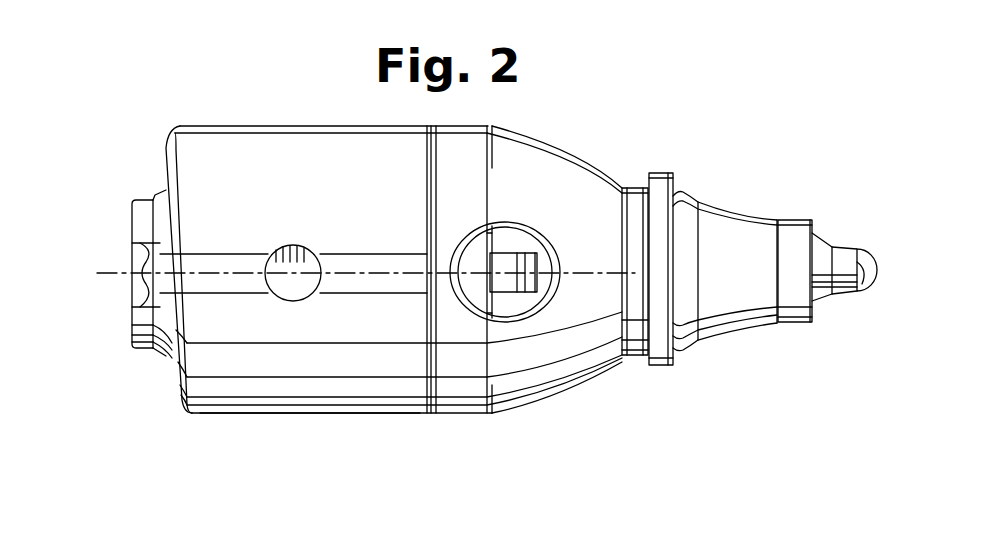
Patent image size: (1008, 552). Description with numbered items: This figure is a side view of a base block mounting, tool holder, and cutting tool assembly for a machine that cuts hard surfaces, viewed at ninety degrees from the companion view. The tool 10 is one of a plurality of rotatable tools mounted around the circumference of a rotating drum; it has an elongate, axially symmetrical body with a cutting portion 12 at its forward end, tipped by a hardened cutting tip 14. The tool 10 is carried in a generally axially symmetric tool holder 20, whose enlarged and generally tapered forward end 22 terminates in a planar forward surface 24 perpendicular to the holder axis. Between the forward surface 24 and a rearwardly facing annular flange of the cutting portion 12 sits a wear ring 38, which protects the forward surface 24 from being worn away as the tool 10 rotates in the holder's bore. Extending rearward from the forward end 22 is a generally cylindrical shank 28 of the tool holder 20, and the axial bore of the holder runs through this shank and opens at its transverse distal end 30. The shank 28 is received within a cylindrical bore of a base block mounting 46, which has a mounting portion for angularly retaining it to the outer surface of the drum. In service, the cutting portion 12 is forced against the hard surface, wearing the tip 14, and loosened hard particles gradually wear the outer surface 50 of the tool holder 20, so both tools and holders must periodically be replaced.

The tool 10 is at (762, 212).
The cutting portion 12 is at (793, 322).
The cutting tip 14 is at (871, 262).
The tool holder 20 is at (575, 156).
The forward end 22 is at (584, 379).
The forward surface 24 is at (652, 317).
The shank 28 is at (158, 354).
The distal end 30 is at (127, 216).
The wear ring 38 is at (673, 172).
The base block mounting 46 is at (237, 418).
The outer surface 50 is at (529, 403).